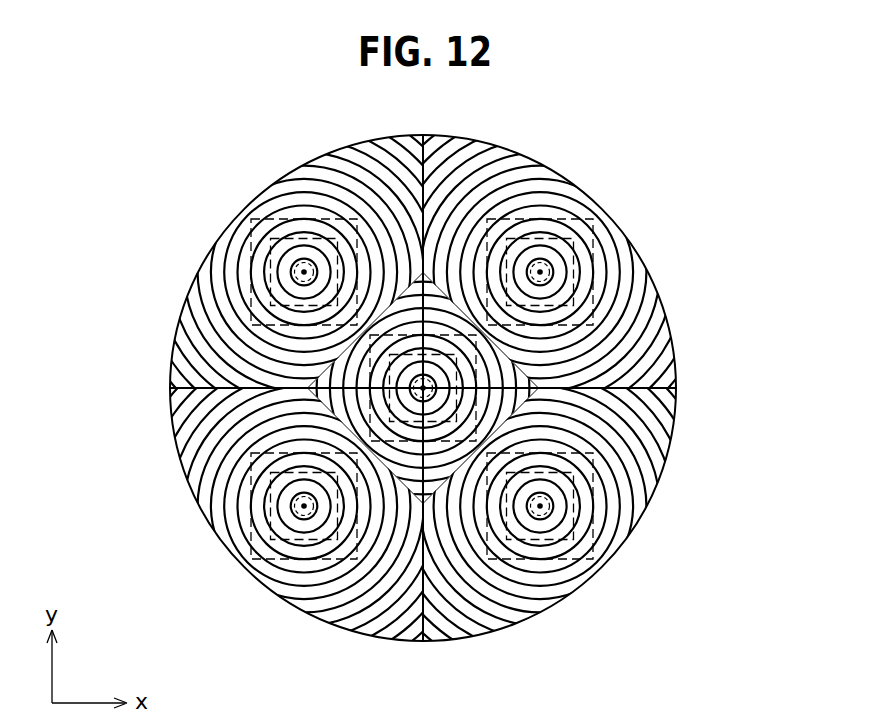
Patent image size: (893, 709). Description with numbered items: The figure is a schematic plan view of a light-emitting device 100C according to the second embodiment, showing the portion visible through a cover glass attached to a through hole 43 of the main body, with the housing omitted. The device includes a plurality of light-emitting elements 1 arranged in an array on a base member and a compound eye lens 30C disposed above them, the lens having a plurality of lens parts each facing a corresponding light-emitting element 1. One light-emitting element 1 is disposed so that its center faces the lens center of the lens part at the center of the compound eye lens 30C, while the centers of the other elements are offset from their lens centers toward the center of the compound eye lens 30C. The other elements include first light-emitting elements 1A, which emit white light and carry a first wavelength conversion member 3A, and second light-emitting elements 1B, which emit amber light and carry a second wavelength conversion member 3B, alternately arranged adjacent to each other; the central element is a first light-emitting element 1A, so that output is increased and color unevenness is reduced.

The light-emitting device 100C is at (446, 354).
The compound eye lens 30C is at (670, 320).
The through hole 43 is at (178, 443).
The light-emitting element 1 is at (446, 354).
The first light-emitting element 1A is at (446, 354).
The second light-emitting element 1B is at (446, 354).
The first wavelength conversion member 3A is at (270, 268).
The second wavelength conversion member 3B is at (597, 275).